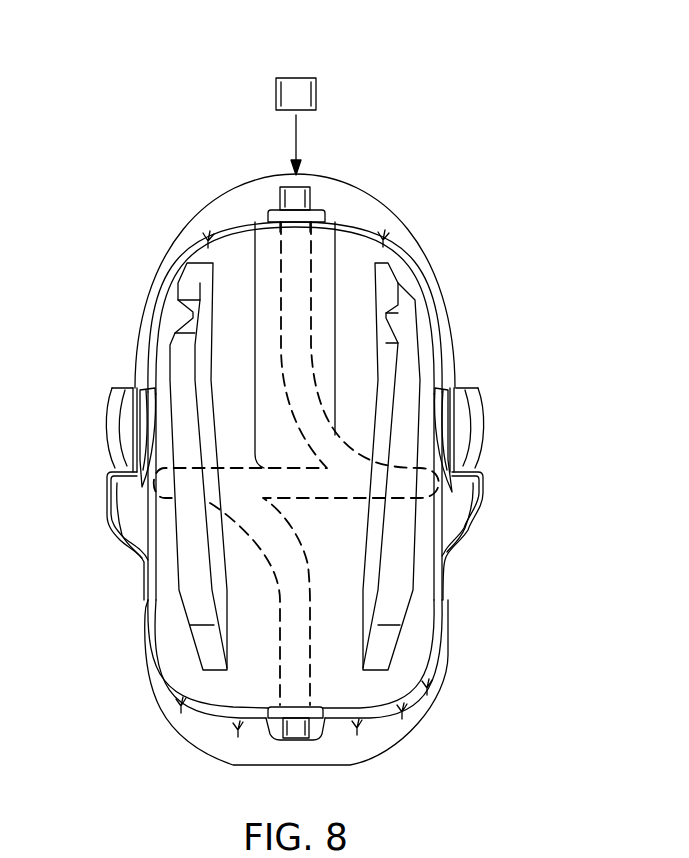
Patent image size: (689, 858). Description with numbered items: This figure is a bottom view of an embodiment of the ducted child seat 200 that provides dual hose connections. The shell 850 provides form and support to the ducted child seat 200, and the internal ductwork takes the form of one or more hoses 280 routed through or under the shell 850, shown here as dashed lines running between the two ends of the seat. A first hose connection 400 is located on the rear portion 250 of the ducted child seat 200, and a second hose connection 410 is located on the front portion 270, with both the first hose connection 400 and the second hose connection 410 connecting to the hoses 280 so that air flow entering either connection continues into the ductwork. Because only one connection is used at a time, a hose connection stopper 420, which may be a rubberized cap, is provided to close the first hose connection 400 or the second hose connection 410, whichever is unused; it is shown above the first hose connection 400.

The ducted child seat 200 is at (143, 558).
The rear portion 250 is at (533, 155).
The front portion 270 is at (533, 667).
The hoses 280 is at (317, 448).
The first hose connection 400 is at (309, 188).
The second hose connection 410 is at (304, 733).
The hose connection stopper 420 is at (316, 80).
The shell 850 is at (412, 595).